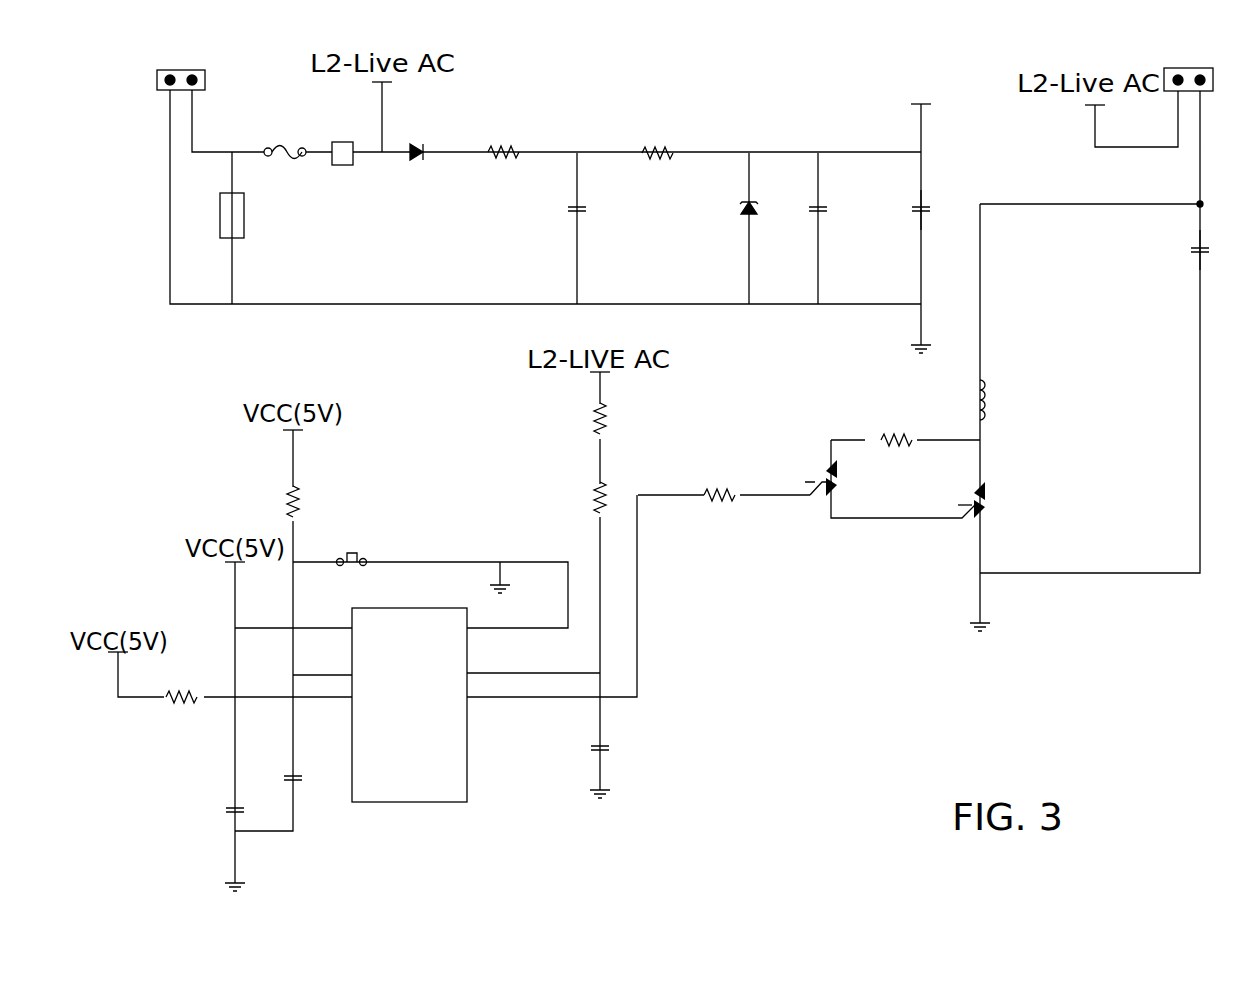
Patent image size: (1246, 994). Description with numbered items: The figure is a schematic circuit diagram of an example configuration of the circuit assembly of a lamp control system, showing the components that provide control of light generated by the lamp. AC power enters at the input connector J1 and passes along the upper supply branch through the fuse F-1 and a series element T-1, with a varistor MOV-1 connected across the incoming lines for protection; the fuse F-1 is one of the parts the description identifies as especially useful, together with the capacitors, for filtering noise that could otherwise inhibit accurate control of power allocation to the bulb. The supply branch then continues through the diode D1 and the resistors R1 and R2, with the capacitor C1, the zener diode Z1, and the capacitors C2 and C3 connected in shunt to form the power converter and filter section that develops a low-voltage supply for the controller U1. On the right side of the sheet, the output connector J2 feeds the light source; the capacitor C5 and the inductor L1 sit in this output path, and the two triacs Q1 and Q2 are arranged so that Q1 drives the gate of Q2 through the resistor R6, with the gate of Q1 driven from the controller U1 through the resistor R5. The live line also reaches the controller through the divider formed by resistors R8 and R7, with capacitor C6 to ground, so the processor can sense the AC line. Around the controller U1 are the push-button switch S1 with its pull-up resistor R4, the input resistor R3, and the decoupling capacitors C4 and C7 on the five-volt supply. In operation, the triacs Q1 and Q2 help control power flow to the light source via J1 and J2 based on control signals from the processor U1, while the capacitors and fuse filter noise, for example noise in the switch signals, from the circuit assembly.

The connector J1 is at (175, 74).
The fuse F-1 is at (278, 157).
The thermal cutoff T-1 is at (342, 135).
The metal oxide varistor MOV-1 is at (262, 217).
The rectifier diode D1 is at (419, 139).
The resistor R1 is at (505, 138).
The resistor R2 is at (659, 138).
The capacitor C1 is at (559, 228).
The zener diode Z1 is at (726, 228).
The capacitor C2 is at (798, 228).
The capacitor C3 is at (897, 210).
The connector J2 is at (1188, 63).
The capacitor C5 is at (1217, 250).
The inductor L1 is at (1007, 400).
The resistor R6 is at (905, 426).
The triac Q1 is at (881, 479).
The triac Q2 is at (981, 502).
The resistor R5 is at (724, 508).
The resistor R8 is at (577, 427).
The resistor R7 is at (577, 603).
The capacitor C6 is at (584, 766).
The push button switch S1 is at (351, 540).
The resistor R4 is at (271, 502).
The resistor R3 is at (180, 684).
The capacitor C4 is at (215, 812).
The capacitor C7 is at (276, 780).
The controller U1 is at (416, 721).